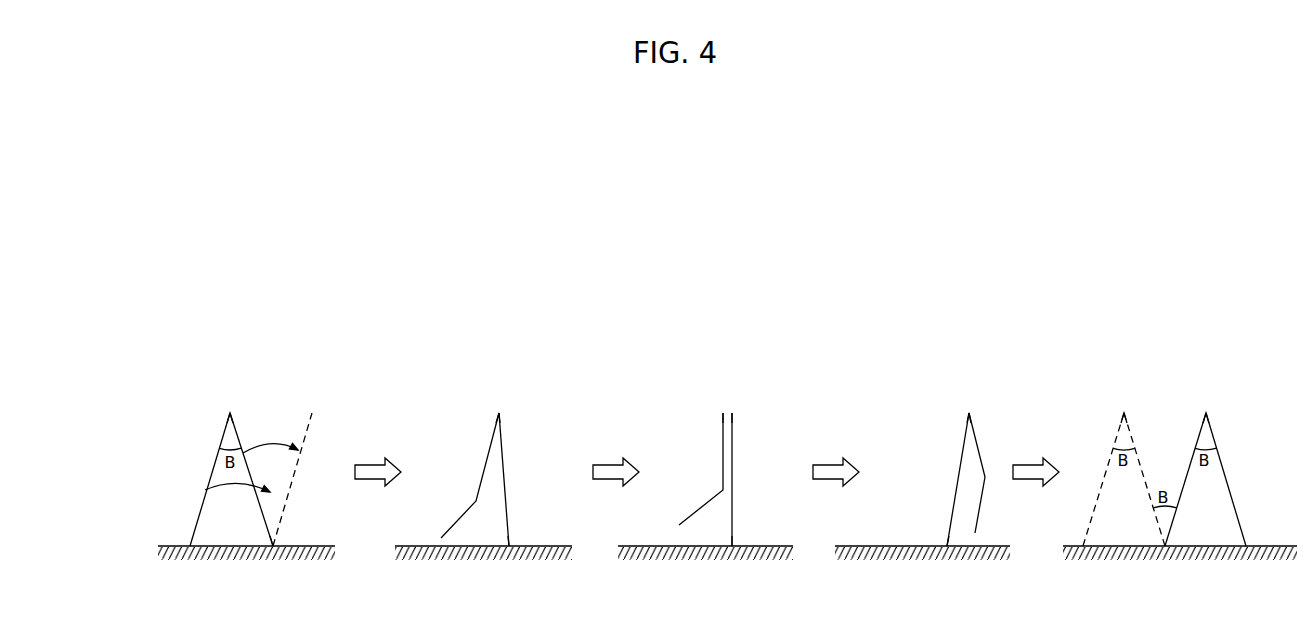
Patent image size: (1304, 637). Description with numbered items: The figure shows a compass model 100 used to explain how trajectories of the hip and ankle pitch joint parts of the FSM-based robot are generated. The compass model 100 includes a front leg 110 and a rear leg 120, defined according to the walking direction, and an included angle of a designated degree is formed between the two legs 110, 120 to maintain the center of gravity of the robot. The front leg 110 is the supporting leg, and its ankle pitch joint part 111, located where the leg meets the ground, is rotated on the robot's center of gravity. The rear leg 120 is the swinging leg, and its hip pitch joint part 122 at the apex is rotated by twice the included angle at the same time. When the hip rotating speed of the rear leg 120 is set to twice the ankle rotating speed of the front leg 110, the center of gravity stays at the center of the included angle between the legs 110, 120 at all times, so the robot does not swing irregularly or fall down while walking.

The compass model 100 is at (180, 462).
The front leg 110 is at (237, 435).
The ankle pitch joint part 111 is at (275, 546).
The rear leg 120 is at (202, 505).
The hip pitch joint part 122 is at (230, 413).